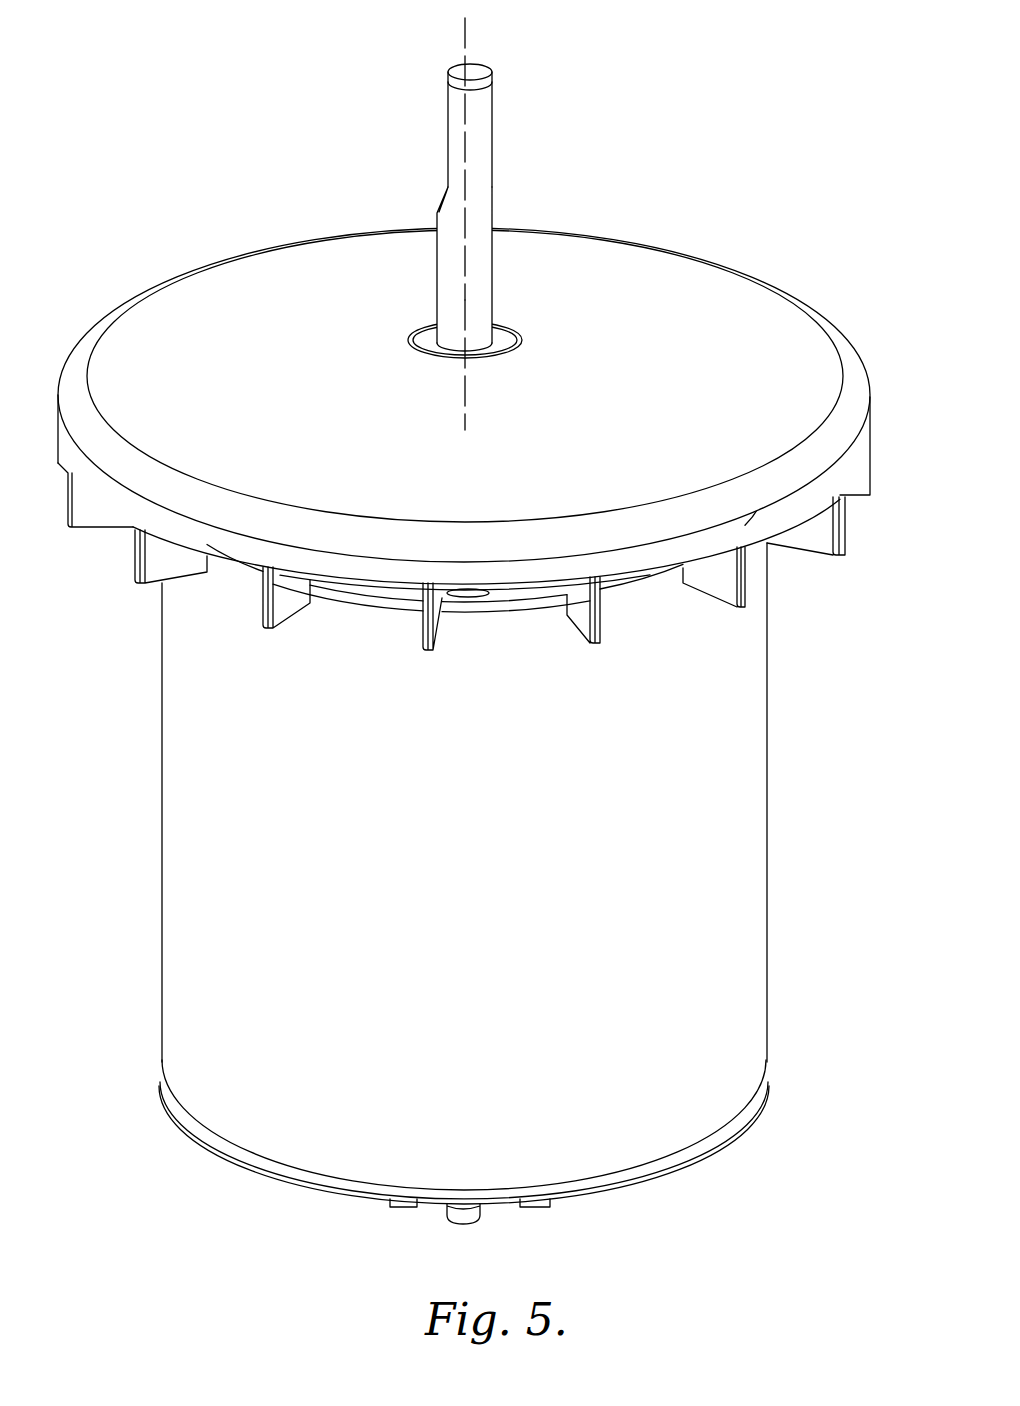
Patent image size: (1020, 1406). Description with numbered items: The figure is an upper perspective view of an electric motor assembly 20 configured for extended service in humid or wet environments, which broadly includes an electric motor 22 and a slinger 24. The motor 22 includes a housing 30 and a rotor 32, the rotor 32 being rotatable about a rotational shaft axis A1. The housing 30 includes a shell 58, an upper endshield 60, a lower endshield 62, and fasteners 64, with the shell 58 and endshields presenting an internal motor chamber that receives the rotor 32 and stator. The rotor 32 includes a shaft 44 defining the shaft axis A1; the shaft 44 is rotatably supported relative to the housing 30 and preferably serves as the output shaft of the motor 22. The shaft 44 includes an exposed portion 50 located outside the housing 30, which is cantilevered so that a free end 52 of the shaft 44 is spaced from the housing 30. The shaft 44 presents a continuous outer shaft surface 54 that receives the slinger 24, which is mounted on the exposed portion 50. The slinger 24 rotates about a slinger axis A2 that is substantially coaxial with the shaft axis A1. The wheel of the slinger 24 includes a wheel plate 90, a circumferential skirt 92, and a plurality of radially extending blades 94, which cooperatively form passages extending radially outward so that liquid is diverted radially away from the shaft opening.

The electric motor assembly 20 is at (742, 72).
The electric motor 22 is at (753, 840).
The slinger 24 is at (735, 292).
The housing 30 is at (745, 777).
The rotor 32 is at (488, 280).
The shaft 44 is at (484, 112).
The exposed portion 50 is at (481, 95).
The free end 52 is at (462, 72).
The continuous outer shaft surface 54 is at (486, 202).
The shell 58 is at (205, 948).
The upper endshield 60 is at (377, 603).
The lower endshield 62 is at (670, 1175).
The fasteners 64 is at (465, 1208).
The wheel plate 90 is at (235, 288).
The circumferential skirt 92 is at (113, 497).
The radially extending blades 94 is at (277, 603).
The shaft axis A1 is at (465, 143).
The slinger axis A2 is at (465, 305).